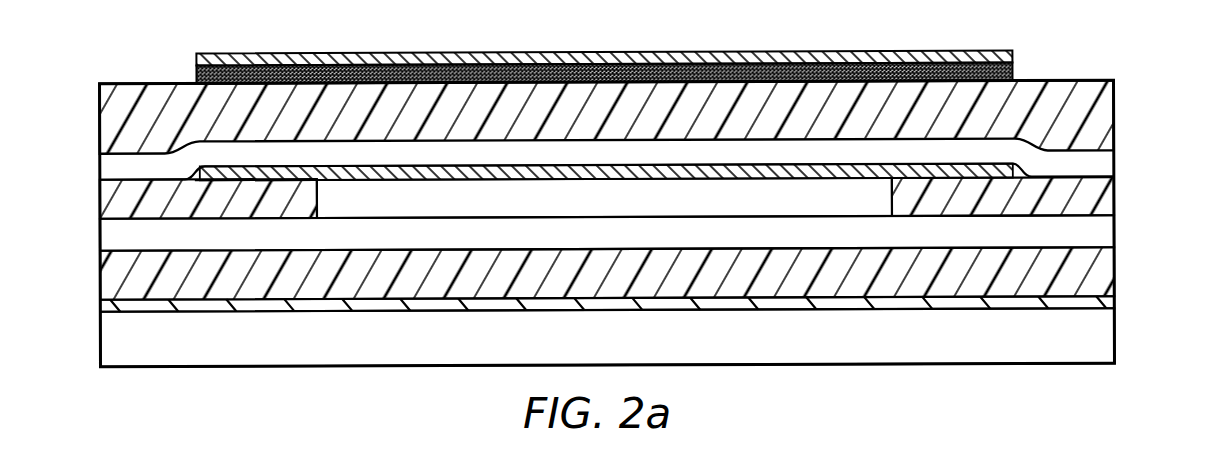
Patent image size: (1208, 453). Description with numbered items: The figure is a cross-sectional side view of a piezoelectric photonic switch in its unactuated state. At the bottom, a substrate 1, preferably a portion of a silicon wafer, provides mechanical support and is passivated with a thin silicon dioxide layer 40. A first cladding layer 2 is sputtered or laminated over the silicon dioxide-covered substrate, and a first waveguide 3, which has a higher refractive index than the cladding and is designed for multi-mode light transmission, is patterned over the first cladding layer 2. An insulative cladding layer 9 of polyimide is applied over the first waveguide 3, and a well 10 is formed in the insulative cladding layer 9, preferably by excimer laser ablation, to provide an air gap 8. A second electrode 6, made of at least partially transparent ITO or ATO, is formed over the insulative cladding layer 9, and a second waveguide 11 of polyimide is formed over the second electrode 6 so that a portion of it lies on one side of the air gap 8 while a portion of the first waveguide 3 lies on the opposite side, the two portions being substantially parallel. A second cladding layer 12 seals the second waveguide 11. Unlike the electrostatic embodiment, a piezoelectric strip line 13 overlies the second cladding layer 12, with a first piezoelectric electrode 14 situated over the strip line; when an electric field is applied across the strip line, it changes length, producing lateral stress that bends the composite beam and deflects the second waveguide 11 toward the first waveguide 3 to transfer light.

The substrate 1 is at (1085, 330).
The first cladding layer 2 is at (1092, 275).
The silicon dioxide layer 40 is at (1095, 302).
The first waveguide 3 is at (1090, 231).
The insulative cladding layer 9 is at (118, 206).
The air gap 8 is at (778, 200).
The well 10 is at (306, 185).
The second electrode 6 is at (242, 178).
The second waveguide 11 is at (115, 172).
The second cladding layer 12 is at (1090, 109).
The piezoelectric strip line 13 is at (424, 64).
The first piezoelectric electrode 14 is at (402, 65).